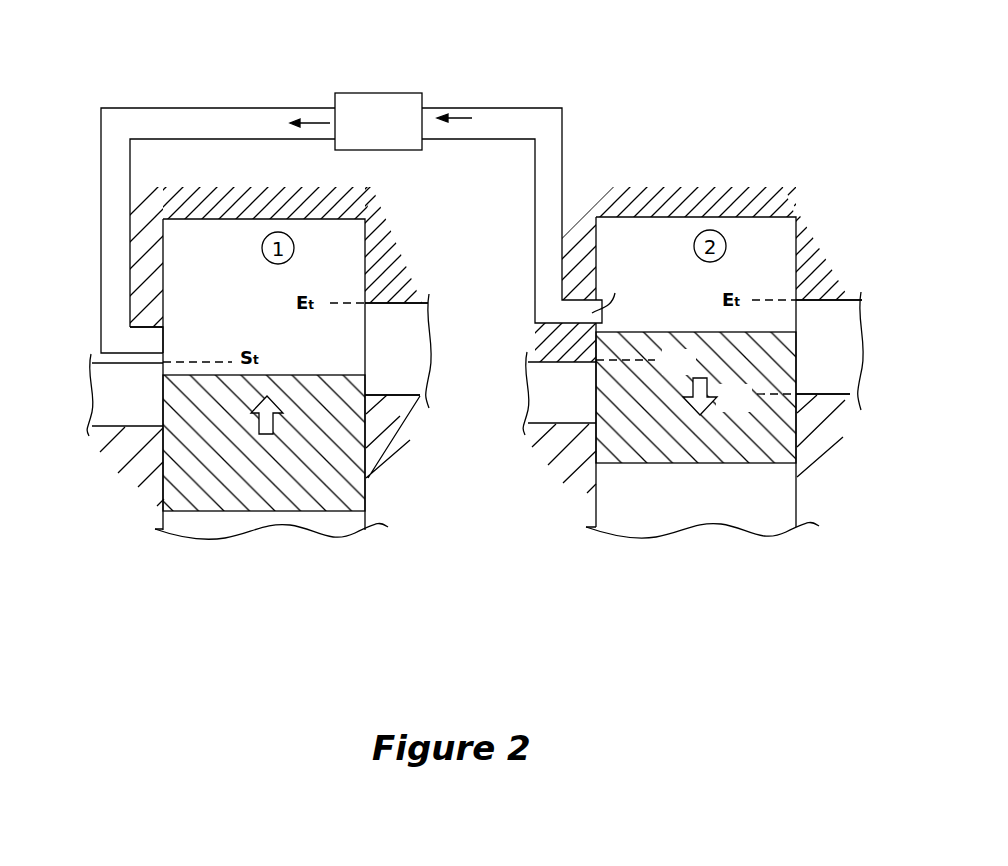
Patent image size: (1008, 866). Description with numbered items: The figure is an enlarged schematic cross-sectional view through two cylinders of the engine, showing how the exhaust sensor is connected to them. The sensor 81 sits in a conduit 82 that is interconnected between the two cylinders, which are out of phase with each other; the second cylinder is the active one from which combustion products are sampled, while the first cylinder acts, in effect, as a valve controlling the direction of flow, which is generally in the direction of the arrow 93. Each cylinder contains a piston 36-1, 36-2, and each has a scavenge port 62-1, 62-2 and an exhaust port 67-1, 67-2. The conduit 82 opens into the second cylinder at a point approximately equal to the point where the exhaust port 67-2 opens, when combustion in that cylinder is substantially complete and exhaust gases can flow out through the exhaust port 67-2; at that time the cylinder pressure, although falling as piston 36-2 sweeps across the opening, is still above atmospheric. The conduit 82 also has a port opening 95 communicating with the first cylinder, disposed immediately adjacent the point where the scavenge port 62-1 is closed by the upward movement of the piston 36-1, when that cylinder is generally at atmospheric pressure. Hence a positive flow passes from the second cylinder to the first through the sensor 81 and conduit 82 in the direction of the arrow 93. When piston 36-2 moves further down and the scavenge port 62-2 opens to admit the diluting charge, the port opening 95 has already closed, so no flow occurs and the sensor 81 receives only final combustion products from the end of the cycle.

The piston 36-1 is at (268, 490).
The piston 36-2 is at (698, 445).
The scavenge port 62-1 is at (103, 396).
The scavenge port 62-2 is at (537, 405).
The exhaust port 67-1 is at (422, 342).
The exhaust port 67-2 is at (840, 343).
The sensor 81 is at (378, 93).
The conduit 82 is at (204, 108).
The arrow 93 is at (458, 114).
The port opening 95 is at (160, 343).